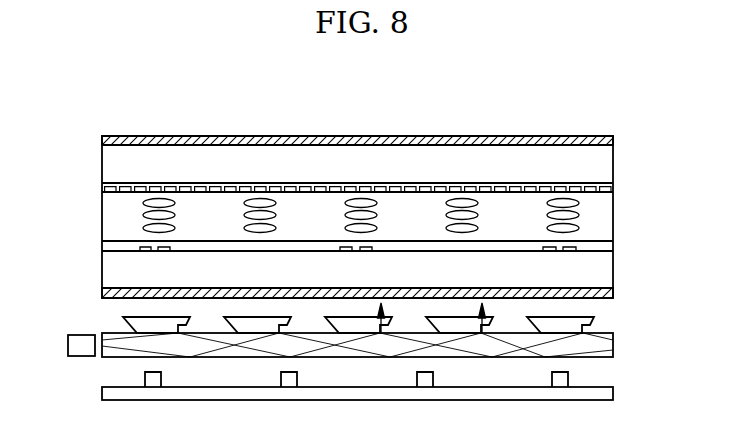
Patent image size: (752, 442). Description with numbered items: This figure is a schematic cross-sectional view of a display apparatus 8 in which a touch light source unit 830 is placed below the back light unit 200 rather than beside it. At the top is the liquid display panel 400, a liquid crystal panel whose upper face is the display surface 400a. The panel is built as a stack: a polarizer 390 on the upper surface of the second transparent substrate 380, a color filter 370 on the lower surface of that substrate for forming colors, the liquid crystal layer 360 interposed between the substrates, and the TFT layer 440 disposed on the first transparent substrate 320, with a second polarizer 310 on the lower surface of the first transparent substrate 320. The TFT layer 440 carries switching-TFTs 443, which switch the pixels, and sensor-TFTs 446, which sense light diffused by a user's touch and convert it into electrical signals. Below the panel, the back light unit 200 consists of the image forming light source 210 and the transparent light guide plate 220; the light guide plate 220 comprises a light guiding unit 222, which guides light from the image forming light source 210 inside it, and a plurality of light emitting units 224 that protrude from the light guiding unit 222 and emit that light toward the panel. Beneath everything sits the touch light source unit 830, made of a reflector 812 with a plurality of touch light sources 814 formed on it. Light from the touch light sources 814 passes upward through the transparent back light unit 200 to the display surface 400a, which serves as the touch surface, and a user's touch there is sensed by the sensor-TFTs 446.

The display apparatus 8 is at (601, 114).
The liquid display panel 400 is at (92, 137).
The display surface 400a is at (178, 135).
The polarizer 390 is at (613, 141).
The second transparent substrate 380 is at (613, 168).
The color filter 370 is at (613, 188).
The liquid crystal layer 360 is at (613, 221).
The TFT layer 440 is at (613, 248).
The switching-TFT 443 is at (140, 252).
The sensor-TFT 446 is at (170, 252).
The first transparent substrate 320 is at (613, 273).
The polarizer 310 is at (613, 295).
The back light unit 200 is at (63, 315).
The image forming light source 210 is at (82, 335).
The transparent light guide plate 220 is at (663, 317).
The light guiding unit 222 is at (613, 345).
The light emitting unit 224 is at (586, 319).
The touch light source unit 830 is at (88, 367).
The reflector 812 is at (613, 393).
The touch light source 814 is at (153, 388).